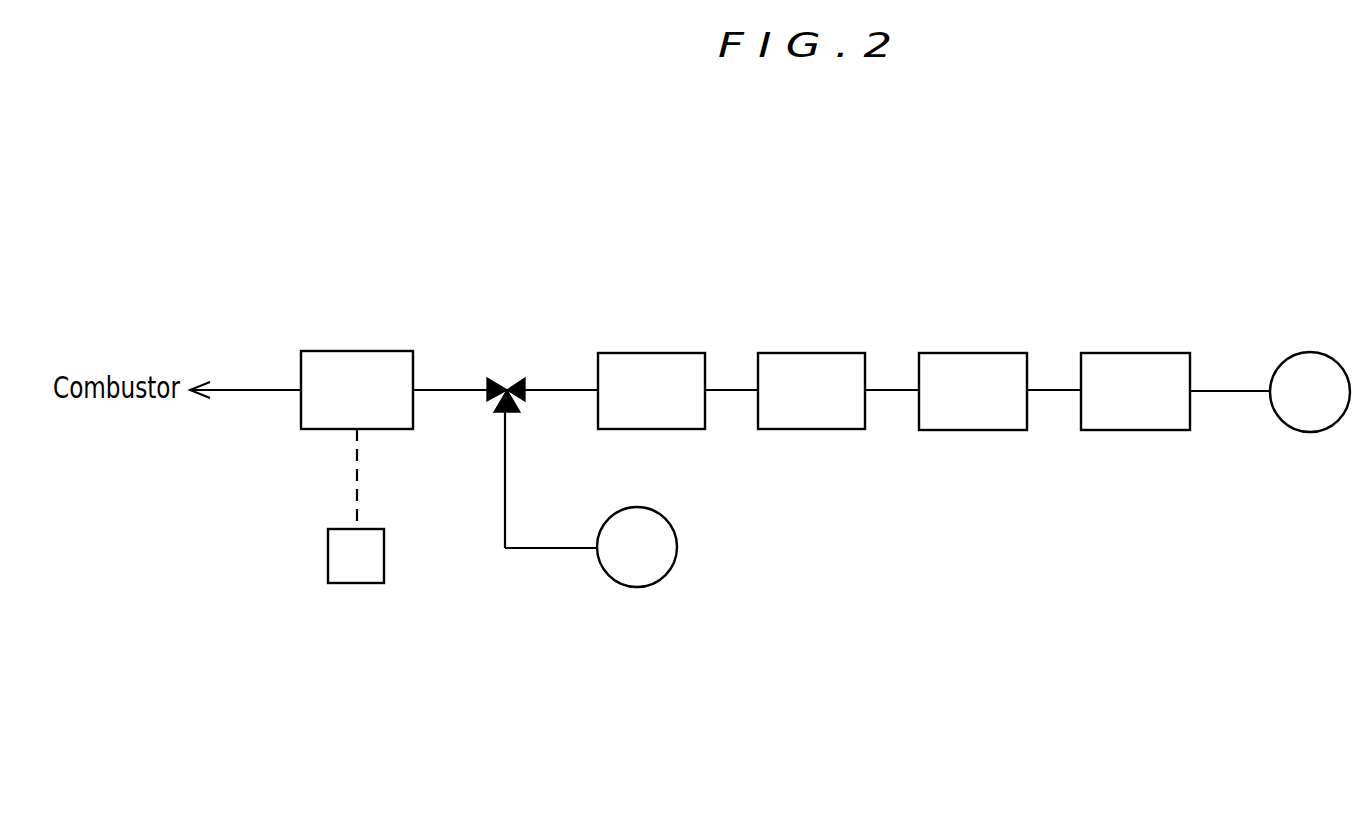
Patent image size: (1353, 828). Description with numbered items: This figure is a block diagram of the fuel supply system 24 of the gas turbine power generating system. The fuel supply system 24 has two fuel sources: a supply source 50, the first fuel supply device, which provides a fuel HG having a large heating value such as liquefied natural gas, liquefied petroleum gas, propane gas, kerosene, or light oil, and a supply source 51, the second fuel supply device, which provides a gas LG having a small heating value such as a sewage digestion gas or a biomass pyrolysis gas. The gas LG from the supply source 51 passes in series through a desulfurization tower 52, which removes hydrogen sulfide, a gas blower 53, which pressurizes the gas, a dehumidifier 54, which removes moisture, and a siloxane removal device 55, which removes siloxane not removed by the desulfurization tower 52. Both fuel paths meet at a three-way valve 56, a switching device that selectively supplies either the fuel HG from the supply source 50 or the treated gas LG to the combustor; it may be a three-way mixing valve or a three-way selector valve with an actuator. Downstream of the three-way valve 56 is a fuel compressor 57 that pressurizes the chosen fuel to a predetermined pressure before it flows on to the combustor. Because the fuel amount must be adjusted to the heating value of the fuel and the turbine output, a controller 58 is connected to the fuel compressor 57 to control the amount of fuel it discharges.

The fuel supply system 24 is at (1120, 220).
The supply source (first fuel supply device) 50 is at (637, 587).
The supply source (second fuel supply device) 51 is at (1315, 352).
The desulfurization tower 52 is at (1145, 353).
The gas blower 53 is at (970, 353).
The dehumidifier 54 is at (812, 353).
The siloxane removal device 55 is at (655, 353).
The three-way valve 56 is at (505, 375).
The fuel compressor 57 is at (360, 351).
The controller 58 is at (355, 583).